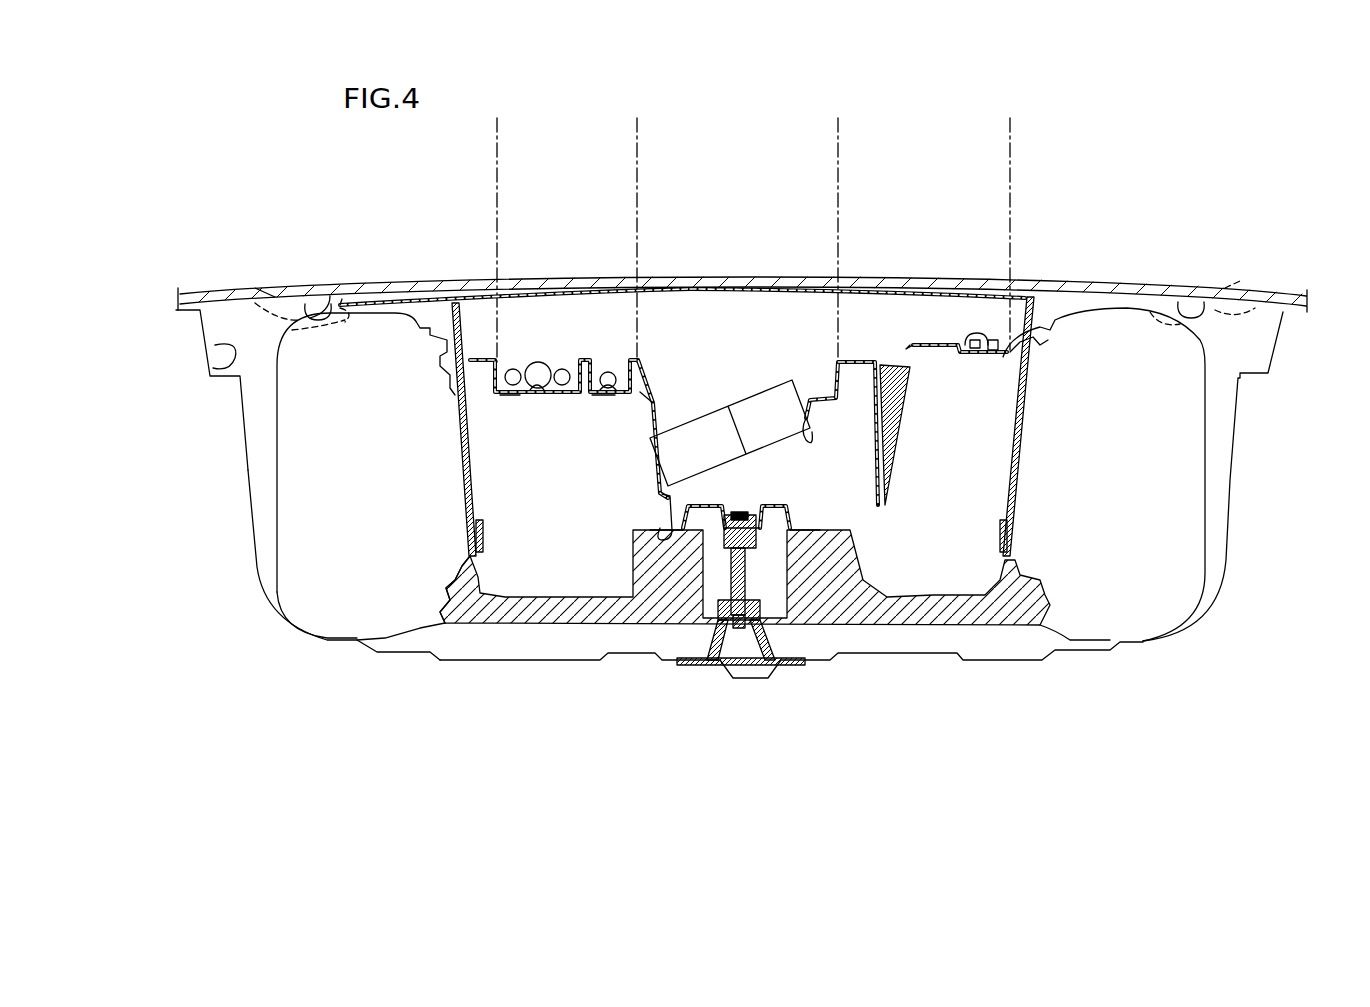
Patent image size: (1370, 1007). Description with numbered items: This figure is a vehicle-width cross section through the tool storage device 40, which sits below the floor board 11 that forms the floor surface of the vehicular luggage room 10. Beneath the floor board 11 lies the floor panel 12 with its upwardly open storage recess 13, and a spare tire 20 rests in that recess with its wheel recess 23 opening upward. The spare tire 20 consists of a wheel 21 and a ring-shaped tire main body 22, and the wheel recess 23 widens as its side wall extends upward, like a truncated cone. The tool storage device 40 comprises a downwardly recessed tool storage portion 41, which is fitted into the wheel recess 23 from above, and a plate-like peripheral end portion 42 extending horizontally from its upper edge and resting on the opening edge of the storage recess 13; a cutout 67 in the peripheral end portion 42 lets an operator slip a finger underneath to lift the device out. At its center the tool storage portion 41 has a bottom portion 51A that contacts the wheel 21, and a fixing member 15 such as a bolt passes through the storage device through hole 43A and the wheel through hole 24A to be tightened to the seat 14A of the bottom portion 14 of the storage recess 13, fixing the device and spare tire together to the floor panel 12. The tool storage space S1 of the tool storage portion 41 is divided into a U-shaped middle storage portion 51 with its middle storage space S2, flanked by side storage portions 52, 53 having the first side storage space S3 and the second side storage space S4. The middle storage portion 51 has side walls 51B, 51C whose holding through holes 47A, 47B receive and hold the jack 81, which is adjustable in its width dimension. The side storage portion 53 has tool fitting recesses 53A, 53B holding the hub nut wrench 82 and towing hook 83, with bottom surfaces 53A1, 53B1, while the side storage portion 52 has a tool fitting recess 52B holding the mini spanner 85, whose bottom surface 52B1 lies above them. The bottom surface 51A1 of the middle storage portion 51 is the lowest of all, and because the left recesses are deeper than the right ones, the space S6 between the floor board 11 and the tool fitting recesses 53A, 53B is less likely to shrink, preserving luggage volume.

The vehicular luggage room 10 is at (212, 283).
The floor board 11 is at (222, 297).
The floor panel 12 is at (390, 661).
The storage recess 13 is at (215, 355).
The bottom portion 14 is at (845, 663).
The seat 14A is at (757, 640).
The fixing member 15 is at (752, 550).
The spare tire 20 is at (266, 416).
The wheel 21 is at (514, 620).
The tire main body 22 is at (397, 612).
The wheel recess 23 is at (485, 405).
The wheel through hole 24A is at (760, 635).
The tool storage device 40 is at (411, 303).
The tool storage portion 41 is at (466, 382).
The peripheral end portion 42 is at (342, 293).
The storage device through hole 43A is at (718, 620).
The holding through hole 47A is at (812, 430).
The holding through hole 47B is at (620, 560).
The middle storage portion 51 is at (808, 405).
The bottom portion 51A is at (805, 525).
The bottom surface 51A1 is at (652, 530).
The side wall 51B is at (810, 412).
The side wall 51C is at (655, 405).
The side storage portion 52 is at (937, 342).
The tool fitting recess 52B is at (1005, 357).
The bottom surface 52B1 is at (963, 353).
The side storage portion 53 is at (568, 393).
The tool fitting recess 53A is at (608, 392).
The bottom surface 53A1 is at (600, 392).
The tool fitting recess 53B is at (562, 392).
The bottom surface 53B1 is at (537, 392).
The cutout 67 is at (318, 302).
The jack 81 is at (768, 440).
The hub nut wrench 82 is at (598, 392).
The towing hook 83 is at (507, 392).
The mini spanner 85 is at (992, 340).
The tool storage space S1 is at (656, 392).
The middle storage space S2 is at (835, 140).
The first side storage space S3 is at (1007, 140).
The second side storage space S4 is at (634, 140).
The space S6 is at (549, 322).